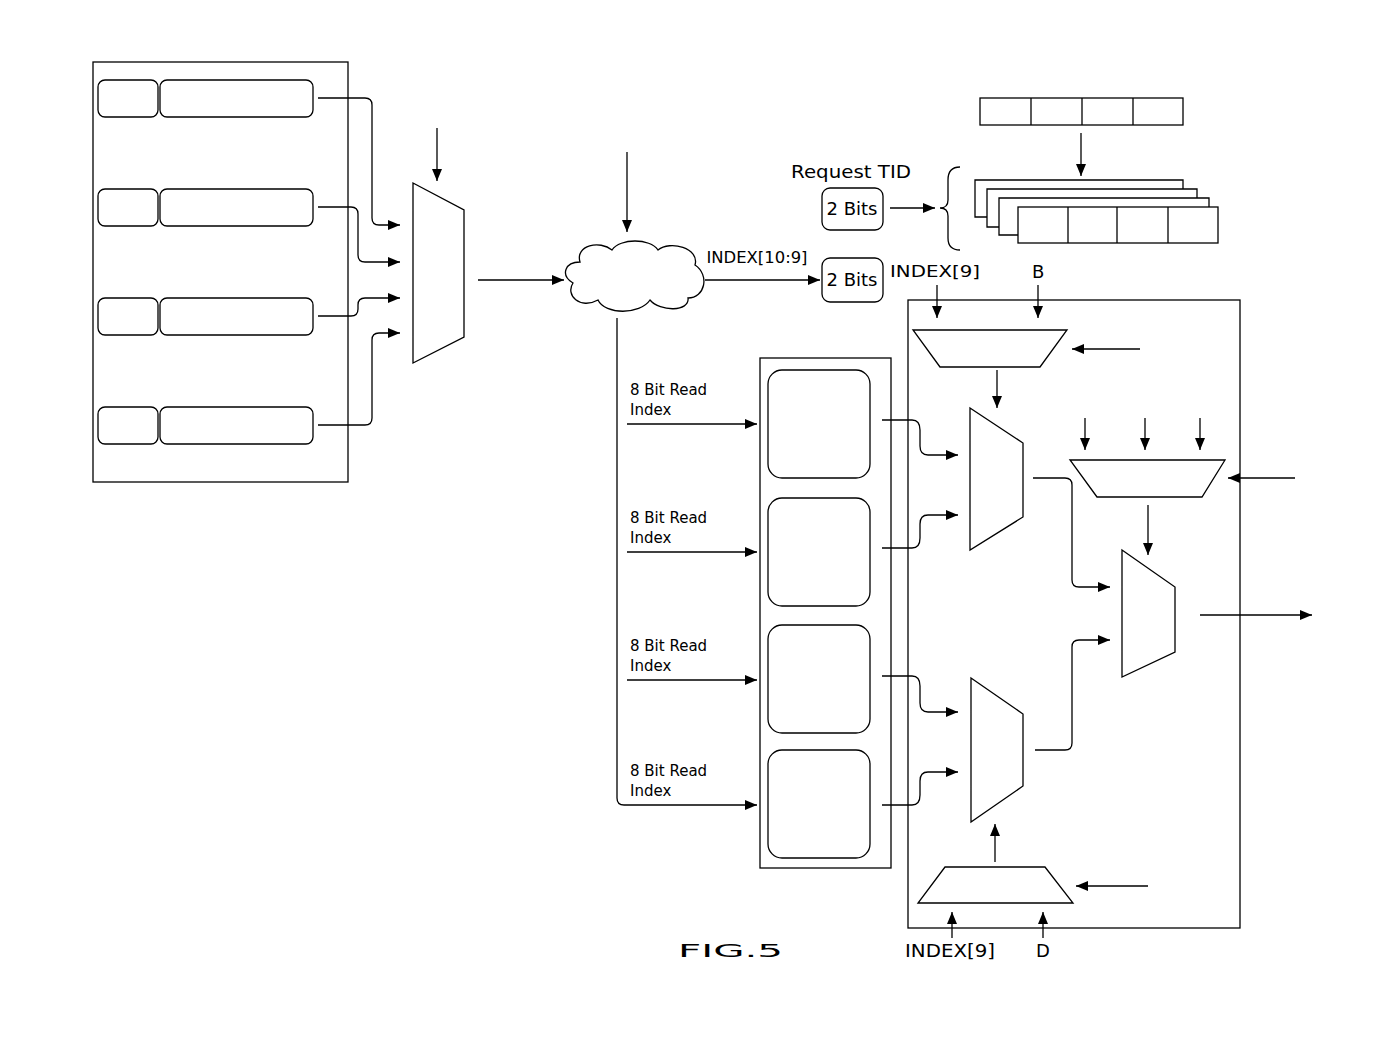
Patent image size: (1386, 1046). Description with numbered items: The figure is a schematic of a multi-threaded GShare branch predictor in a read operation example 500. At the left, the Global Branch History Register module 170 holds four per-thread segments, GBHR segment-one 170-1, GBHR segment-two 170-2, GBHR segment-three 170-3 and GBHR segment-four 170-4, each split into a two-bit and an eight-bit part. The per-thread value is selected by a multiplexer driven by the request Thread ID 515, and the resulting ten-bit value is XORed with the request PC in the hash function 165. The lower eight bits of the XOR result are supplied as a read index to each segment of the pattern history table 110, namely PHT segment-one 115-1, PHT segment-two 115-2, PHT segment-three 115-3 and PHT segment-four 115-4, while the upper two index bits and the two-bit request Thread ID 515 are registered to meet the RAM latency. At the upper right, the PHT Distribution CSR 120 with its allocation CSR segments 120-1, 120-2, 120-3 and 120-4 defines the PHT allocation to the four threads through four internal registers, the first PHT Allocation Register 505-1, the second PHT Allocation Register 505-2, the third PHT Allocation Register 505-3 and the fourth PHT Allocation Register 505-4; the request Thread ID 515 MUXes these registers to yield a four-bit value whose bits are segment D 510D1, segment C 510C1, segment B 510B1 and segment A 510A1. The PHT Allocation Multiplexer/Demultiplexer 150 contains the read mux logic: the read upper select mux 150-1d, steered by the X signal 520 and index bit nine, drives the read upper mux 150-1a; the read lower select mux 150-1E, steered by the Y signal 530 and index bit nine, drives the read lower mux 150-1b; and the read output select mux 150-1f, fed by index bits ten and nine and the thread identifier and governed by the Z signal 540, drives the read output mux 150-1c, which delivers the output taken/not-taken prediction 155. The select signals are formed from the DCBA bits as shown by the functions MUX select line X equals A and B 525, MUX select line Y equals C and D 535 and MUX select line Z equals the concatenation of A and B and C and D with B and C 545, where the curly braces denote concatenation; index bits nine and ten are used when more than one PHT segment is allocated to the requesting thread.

The Global Branch History Register (GBHR) module 170 is at (183, 62).
The GBHR segment-1 170-1 is at (170, 118).
The GBHR segment-2 170-2 is at (170, 227).
The GBHR segment-3 170-3 is at (168, 336).
The GBHR segment-4 170-4 is at (170, 446).
The request Thread ID (TID) 515 is at (422, 100).
The hash function 165 is at (600, 300).
The pattern history tables 110 is at (795, 358).
The PHT segment-1 115-1 is at (777, 440).
The PHT segment-2 115-2 is at (777, 573).
The PHT segment-3 115-3 is at (777, 700).
The PHT segment-4 115-4 is at (777, 823).
The PHT Allocation Control and Status Register (CSR) 120 is at (980, 88).
The PHT Allocation CSR segment-1 120-1 is at (1160, 127).
The PHT Allocation CSR segment-2 120-2 is at (1098, 127).
The PHT Allocation CSR segment-3 120-3 is at (1053, 127).
The PHT Allocation CSR segment-4 120-4 is at (980, 125).
The PHT Allocation Register 1 505-1 is at (1218, 207).
The PHT Allocation Register 2 505-2 is at (1209, 198).
The PHT Allocation Register 3 505-3 is at (1197, 189).
The PHT Allocation Register 4 505-4 is at (1183, 180).
The PHT Allocation Register 1 segment A 510A1 is at (1182, 245).
The PHT Allocation Register 1 segment B 510B1 is at (1157, 245).
The PHT Allocation Register 1 segment C 510C1 is at (1075, 245).
The PHT Allocation Register 1 segment D 510D1 is at (1048, 245).
The PHT Allocation Multiplexer/Demultiplexer (PAMD) 150 is at (1228, 880).
The read upper 2:1 select mux 150-1d is at (986, 368).
The read upper 2:1 mux 150-1a is at (1012, 523).
The read output 4:1 select mux 150-1f is at (1198, 498).
The read output 2:1 mux 150-1c is at (1150, 655).
The read lower 2:1 mux 150-1b is at (1008, 700).
The read lower 2:1 select mux 150-1E is at (1028, 866).
The X signal 520 is at (1118, 333).
The Y signal 530 is at (1122, 868).
The Z signal 540 is at (1272, 444).
The taken/not-taken prediction 155 is at (1253, 616).
The Multi-Threaded GShare Branch Predictor read operation example 500 is at (170, 543).
The MUX select line X=A & B 525 is at (180, 706).
The MUX select line Y=C & D 535 is at (178, 735).
The MUX select line Z={(A & B & C & D), (B & C)} 545 is at (170, 782).